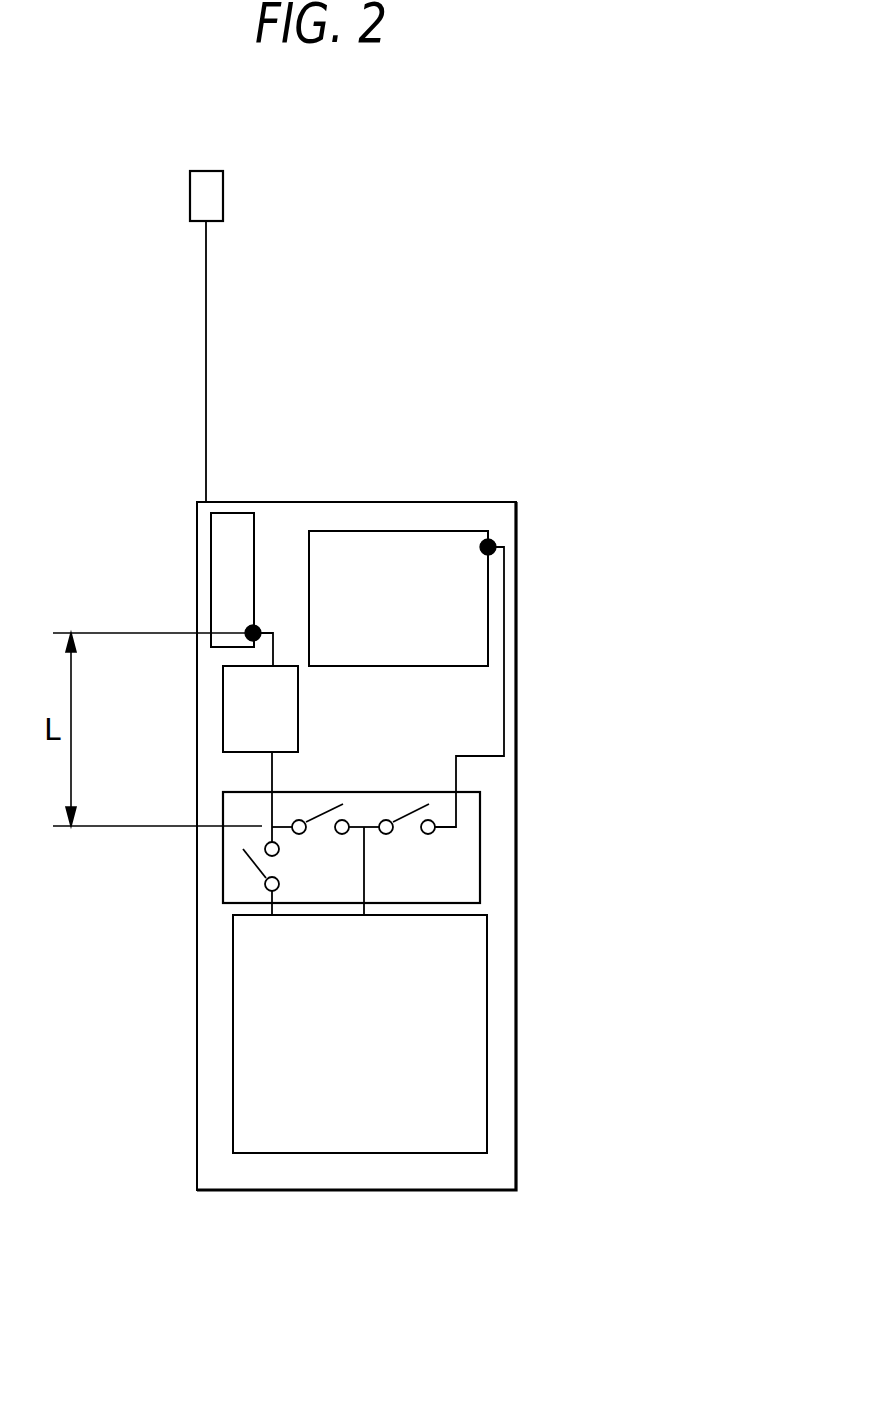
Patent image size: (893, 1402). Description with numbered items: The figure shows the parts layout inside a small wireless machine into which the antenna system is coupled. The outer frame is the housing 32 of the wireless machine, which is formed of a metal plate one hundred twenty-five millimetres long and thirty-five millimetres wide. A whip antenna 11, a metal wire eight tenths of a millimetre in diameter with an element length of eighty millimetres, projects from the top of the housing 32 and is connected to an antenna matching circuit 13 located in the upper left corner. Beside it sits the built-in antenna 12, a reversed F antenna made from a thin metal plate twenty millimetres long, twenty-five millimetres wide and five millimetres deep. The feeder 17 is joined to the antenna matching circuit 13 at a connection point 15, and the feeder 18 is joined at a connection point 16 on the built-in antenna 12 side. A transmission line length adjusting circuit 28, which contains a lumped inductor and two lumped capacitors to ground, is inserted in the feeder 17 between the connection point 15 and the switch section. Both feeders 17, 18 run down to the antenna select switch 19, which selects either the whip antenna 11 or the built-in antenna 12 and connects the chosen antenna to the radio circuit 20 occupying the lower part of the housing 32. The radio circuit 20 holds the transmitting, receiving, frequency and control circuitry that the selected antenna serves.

The whip antenna 11 is at (207, 293).
The built-in antenna 12 is at (435, 555).
The antenna matching circuit 13 is at (222, 548).
The connection point 15 is at (256, 626).
The connection point 16 is at (497, 541).
The feeder 17 is at (276, 651).
The feeder 18 is at (504, 650).
The antenna select switch 19 is at (233, 885).
The radio circuit 20 is at (243, 1067).
The transmission line length adjusting circuit 28 is at (287, 728).
The housing 32 is at (240, 1190).